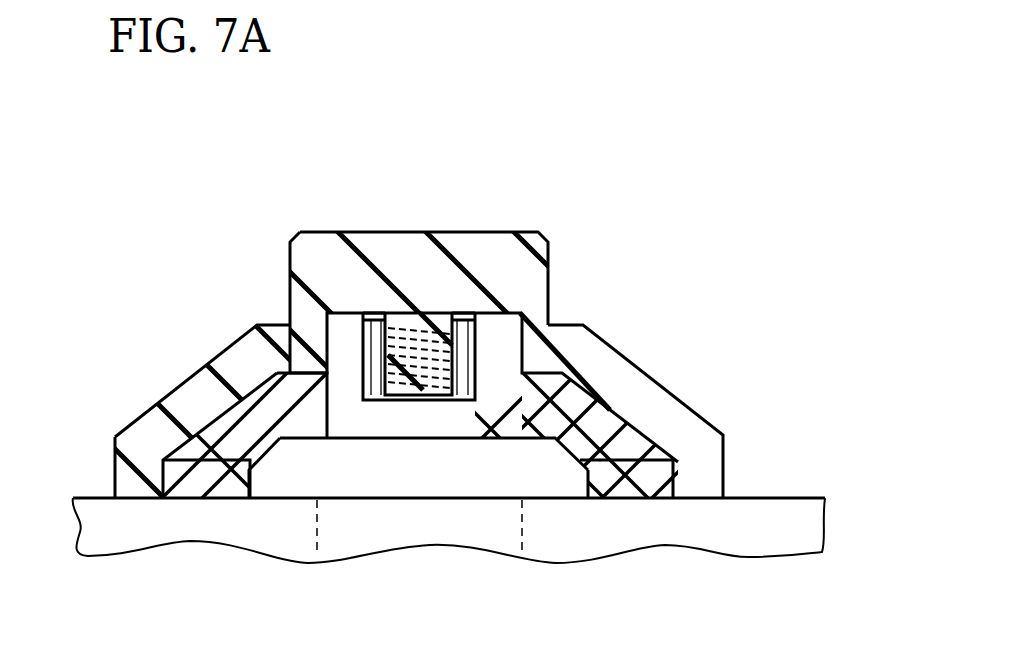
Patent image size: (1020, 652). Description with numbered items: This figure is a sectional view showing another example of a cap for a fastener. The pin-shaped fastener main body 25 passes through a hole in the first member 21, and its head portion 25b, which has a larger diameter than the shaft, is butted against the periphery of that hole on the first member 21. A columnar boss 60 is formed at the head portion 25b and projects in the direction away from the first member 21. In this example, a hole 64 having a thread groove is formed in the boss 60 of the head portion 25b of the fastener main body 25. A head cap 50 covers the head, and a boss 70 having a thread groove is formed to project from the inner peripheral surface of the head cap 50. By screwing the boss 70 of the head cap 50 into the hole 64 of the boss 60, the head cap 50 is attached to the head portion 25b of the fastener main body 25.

The first member 21 is at (790, 497).
The fastener main body 25 is at (560, 438).
The head portion 25b is at (262, 435).
The head cap 50 is at (357, 232).
The boss 60 is at (490, 410).
The hole 64 is at (430, 370).
The boss 70 is at (372, 346).